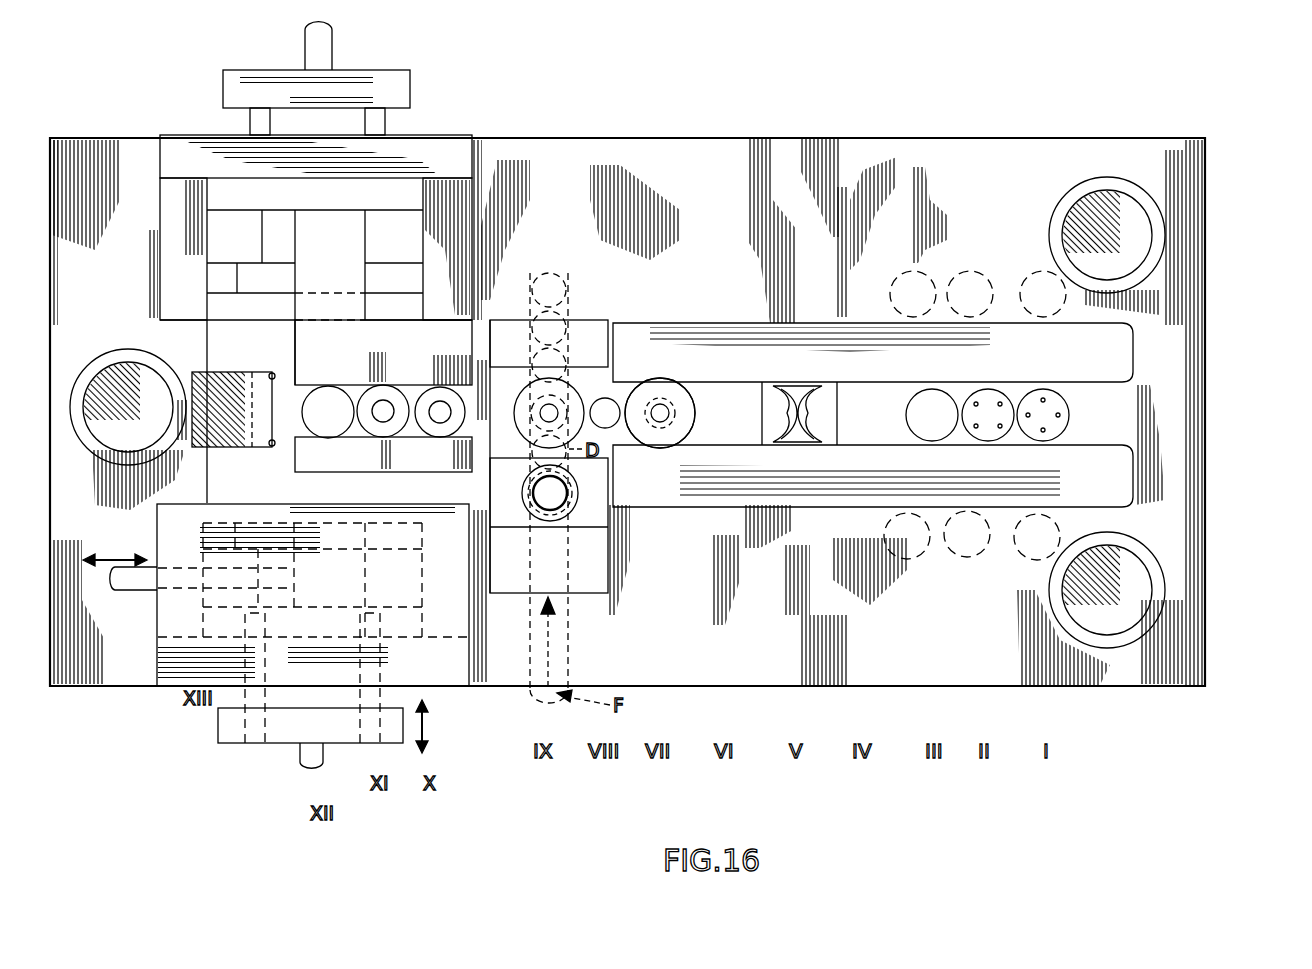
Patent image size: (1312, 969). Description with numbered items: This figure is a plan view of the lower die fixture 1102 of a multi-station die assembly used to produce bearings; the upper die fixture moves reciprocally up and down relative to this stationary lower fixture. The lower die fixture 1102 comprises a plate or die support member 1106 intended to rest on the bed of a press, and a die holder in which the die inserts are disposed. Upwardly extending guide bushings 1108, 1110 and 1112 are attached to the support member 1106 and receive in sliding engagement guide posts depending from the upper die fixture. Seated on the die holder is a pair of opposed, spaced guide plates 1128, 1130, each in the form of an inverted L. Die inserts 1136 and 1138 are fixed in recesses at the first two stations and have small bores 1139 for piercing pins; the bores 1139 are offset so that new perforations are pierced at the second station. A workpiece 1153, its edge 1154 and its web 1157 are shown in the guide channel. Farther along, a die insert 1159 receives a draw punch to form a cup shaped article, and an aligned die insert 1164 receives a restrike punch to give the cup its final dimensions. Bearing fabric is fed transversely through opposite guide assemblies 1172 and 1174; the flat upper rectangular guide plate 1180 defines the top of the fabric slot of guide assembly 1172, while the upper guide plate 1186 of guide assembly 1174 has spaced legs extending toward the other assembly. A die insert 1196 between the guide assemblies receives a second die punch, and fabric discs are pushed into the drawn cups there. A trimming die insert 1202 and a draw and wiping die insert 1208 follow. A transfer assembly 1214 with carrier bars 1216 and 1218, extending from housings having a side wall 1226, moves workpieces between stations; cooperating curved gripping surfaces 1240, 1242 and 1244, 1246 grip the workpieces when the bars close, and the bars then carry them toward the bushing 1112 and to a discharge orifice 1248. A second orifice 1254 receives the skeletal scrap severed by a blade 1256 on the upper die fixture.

The lower die fixture 1102 is at (1032, 815).
The die support member 1106 is at (1206, 594).
The guide bushing 1108 is at (1092, 178).
The guide bushing 1110 is at (1127, 648).
The guide bushing 1112 is at (118, 352).
The guide plate 1128 is at (1118, 494).
The guide plate 1130 is at (1130, 357).
The die insert 1136 is at (1037, 397).
The die insert 1138 is at (988, 398).
The bores 1139 is at (1043, 428).
The workpiece 1153 is at (826, 364).
The workpiece edge 1154 is at (795, 443).
The workpiece web 1157 is at (795, 416).
The die insert 1159 is at (687, 417).
The die insert 1164 is at (613, 412).
The guide assembly 1172 is at (625, 512).
The guide assembly 1174 is at (603, 325).
The upper guide plate 1180 is at (585, 515).
The upper guide plate 1186 is at (518, 333).
The die insert 1196 is at (580, 400).
The trimming die insert 1202 is at (440, 440).
The draw and wiping die insert 1208 is at (383, 440).
The transfer assembly 1214 is at (438, 114).
The carrier bar 1216 is at (383, 430).
The carrier bar 1218 is at (383, 352).
The side wall 1226 is at (430, 62).
The curved gripping surface 1240 is at (383, 440).
The curved gripping surface 1242 is at (440, 386).
The curved gripping surface 1244 is at (372, 452).
The curved gripping surface 1246 is at (418, 345).
The discharge orifice 1248 is at (318, 422).
The second orifice 1254 is at (266, 345).
The blade 1256 is at (215, 758).